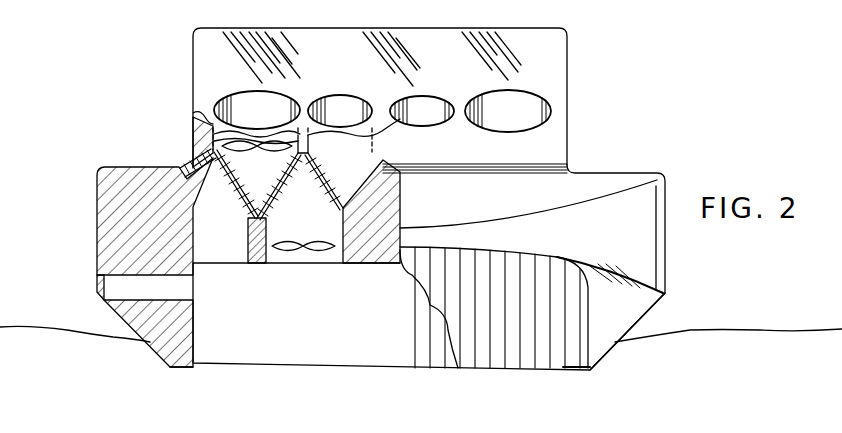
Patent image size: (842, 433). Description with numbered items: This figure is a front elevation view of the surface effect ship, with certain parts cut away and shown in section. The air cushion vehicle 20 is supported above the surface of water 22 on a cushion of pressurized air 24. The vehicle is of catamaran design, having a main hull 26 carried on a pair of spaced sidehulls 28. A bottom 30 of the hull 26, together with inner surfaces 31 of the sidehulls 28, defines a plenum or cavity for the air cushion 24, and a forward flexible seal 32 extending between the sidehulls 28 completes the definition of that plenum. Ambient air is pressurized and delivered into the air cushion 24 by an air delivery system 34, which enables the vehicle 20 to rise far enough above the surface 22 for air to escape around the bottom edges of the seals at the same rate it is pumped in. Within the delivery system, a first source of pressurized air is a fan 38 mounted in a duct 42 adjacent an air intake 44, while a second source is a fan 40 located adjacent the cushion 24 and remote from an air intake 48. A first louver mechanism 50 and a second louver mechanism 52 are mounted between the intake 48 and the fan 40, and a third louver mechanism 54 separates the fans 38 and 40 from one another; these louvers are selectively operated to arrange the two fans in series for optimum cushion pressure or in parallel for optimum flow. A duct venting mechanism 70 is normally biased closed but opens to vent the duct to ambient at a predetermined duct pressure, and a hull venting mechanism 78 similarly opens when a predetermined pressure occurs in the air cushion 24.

The air cushion vehicle 20 is at (120, 131).
The surface of water 22 is at (740, 330).
The cushion of pressurized air 24 is at (342, 340).
The main hull 26 is at (107, 213).
The sidehulls 28 is at (170, 357).
The bottom of the hull 30 is at (367, 263).
The inner surfaces of the sidehulls 31 is at (193, 335).
The forward flexible seal 32 is at (455, 310).
The air delivery system 34 is at (231, 159).
The fan 38 is at (283, 147).
The fan 40 is at (290, 249).
The duct 42 is at (193, 233).
The air intake 44 is at (247, 112).
The air intake 48 is at (342, 106).
The first louver mechanism 50 is at (240, 197).
The second louver mechanism 52 is at (337, 173).
The third louver mechanism 54 is at (292, 185).
The duct venting mechanism 70 is at (191, 168).
The hull venting mechanism 78 is at (100, 292).